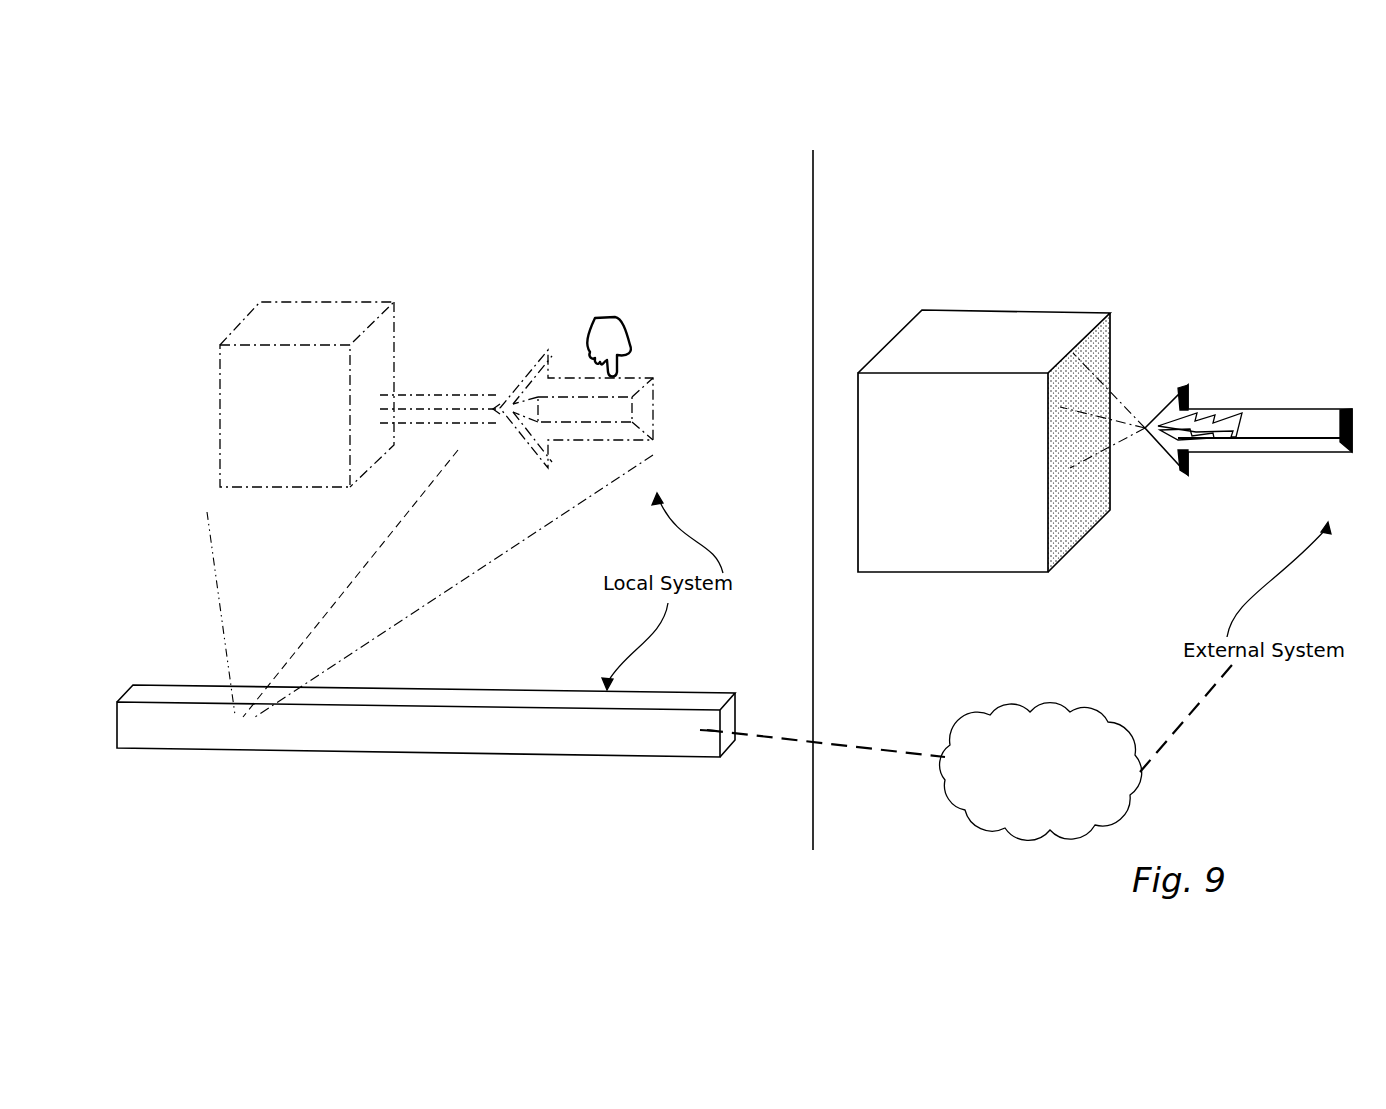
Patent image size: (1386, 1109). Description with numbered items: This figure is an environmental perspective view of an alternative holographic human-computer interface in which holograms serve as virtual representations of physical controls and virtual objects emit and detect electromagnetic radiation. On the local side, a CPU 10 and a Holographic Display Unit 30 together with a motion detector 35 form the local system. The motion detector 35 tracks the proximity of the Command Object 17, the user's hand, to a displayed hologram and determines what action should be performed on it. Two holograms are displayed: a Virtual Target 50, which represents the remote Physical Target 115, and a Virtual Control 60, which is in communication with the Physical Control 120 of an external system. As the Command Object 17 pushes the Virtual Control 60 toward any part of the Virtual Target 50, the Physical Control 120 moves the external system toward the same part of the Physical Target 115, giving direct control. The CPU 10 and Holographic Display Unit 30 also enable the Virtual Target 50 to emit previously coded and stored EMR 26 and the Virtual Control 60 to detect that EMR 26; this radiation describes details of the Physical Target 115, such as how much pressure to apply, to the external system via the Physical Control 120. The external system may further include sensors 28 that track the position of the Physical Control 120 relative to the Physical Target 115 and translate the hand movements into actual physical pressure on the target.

The CPU 10 is at (690, 755).
The command object 17 is at (607, 308).
The EMR 26 is at (460, 388).
The sensors 28 is at (1125, 390).
The holographic display unit 30 is at (235, 755).
The motion detector 35 is at (508, 755).
The virtual target 50 is at (307, 332).
The virtual control 60 is at (655, 408).
The physical target 115 is at (982, 572).
The physical control 120 is at (1295, 453).